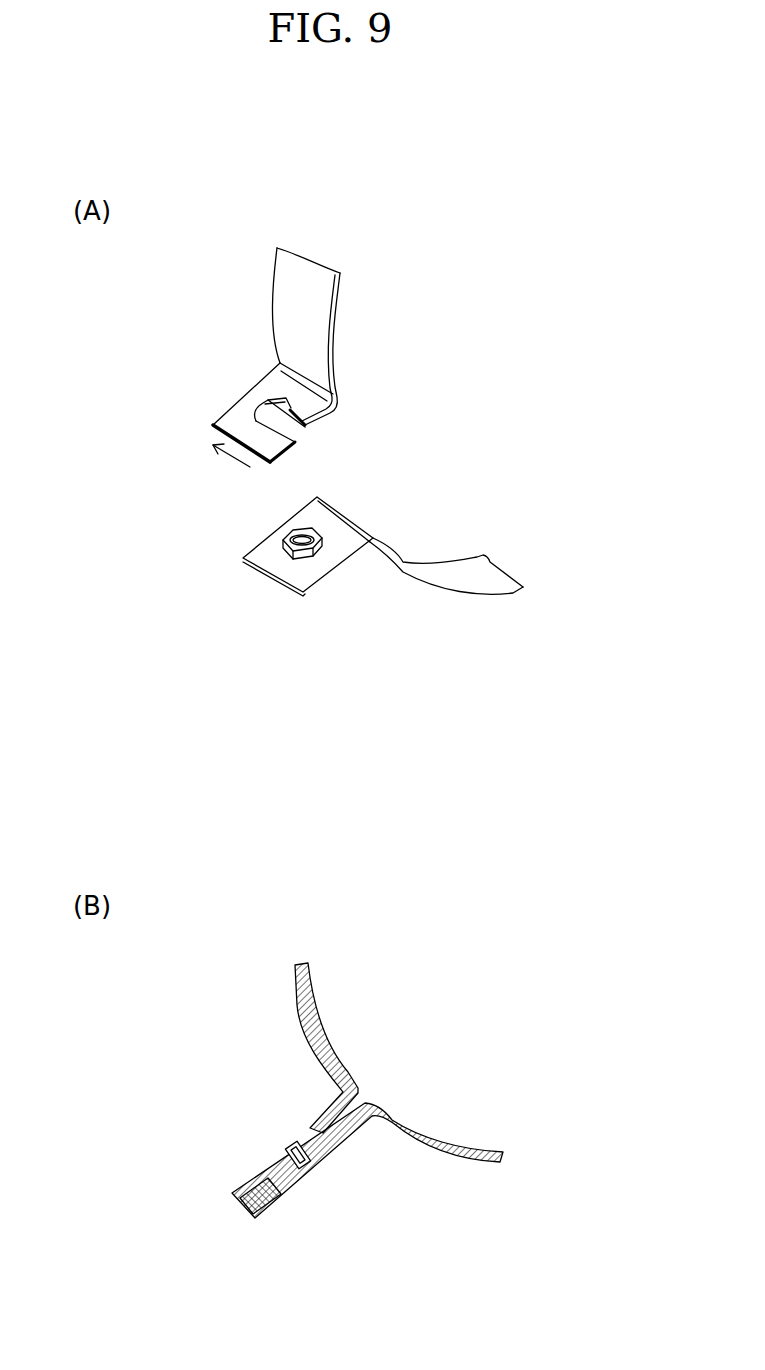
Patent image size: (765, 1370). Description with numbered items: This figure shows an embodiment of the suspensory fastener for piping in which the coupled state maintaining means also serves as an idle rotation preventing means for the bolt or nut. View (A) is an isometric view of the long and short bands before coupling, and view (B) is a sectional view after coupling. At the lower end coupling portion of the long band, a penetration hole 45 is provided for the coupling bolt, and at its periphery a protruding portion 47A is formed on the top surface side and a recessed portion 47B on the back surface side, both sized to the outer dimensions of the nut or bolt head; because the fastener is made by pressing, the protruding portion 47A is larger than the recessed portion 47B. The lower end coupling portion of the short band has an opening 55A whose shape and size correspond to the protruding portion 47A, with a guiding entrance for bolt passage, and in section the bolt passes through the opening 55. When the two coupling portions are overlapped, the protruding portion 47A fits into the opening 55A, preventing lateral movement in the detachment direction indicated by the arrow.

The penetration hole 45 is at (246, 592).
The protruding portion 47A is at (295, 560).
The recessed portion 47B is at (300, 1181).
The opening with guiding entrance 55 is at (290, 1150).
The opening 55A is at (272, 417).